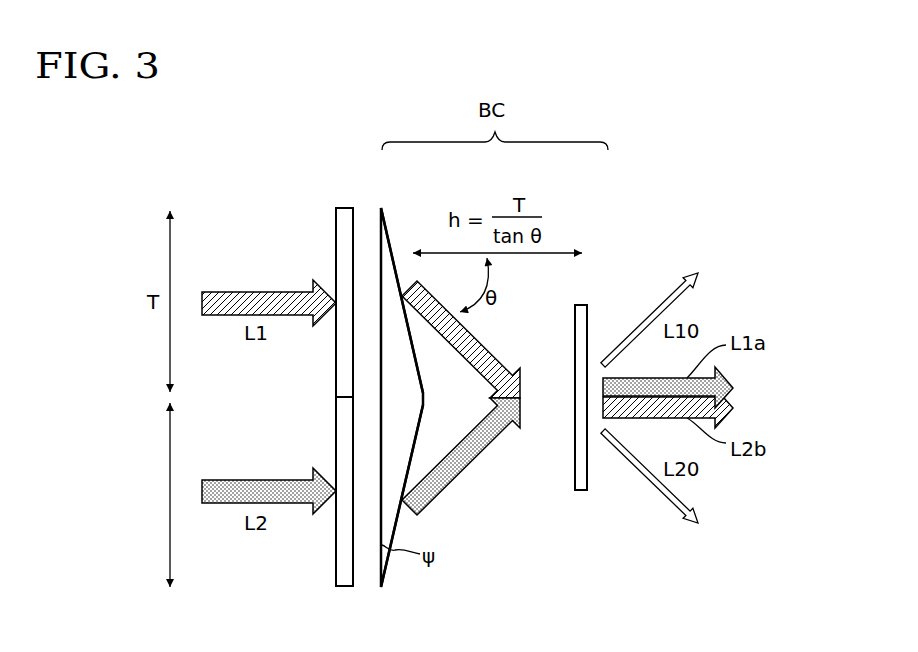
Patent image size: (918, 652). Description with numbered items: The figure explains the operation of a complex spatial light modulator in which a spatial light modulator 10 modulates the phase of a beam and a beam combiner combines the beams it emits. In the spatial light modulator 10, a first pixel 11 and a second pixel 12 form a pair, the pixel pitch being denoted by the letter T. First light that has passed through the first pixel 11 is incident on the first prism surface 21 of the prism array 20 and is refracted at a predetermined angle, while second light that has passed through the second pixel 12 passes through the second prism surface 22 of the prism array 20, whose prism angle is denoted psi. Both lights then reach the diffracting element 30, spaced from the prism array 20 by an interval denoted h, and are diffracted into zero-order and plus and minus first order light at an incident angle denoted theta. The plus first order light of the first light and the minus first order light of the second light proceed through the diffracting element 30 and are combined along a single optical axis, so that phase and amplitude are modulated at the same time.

The spatial light modulator 10 is at (345, 206).
The first pixel 11 is at (347, 237).
The second pixel 12 is at (342, 420).
The prism array 20 is at (381, 207).
The first prism surface 21 is at (390, 237).
The second prism surface 22 is at (408, 419).
The diffracting element 30 is at (580, 303).